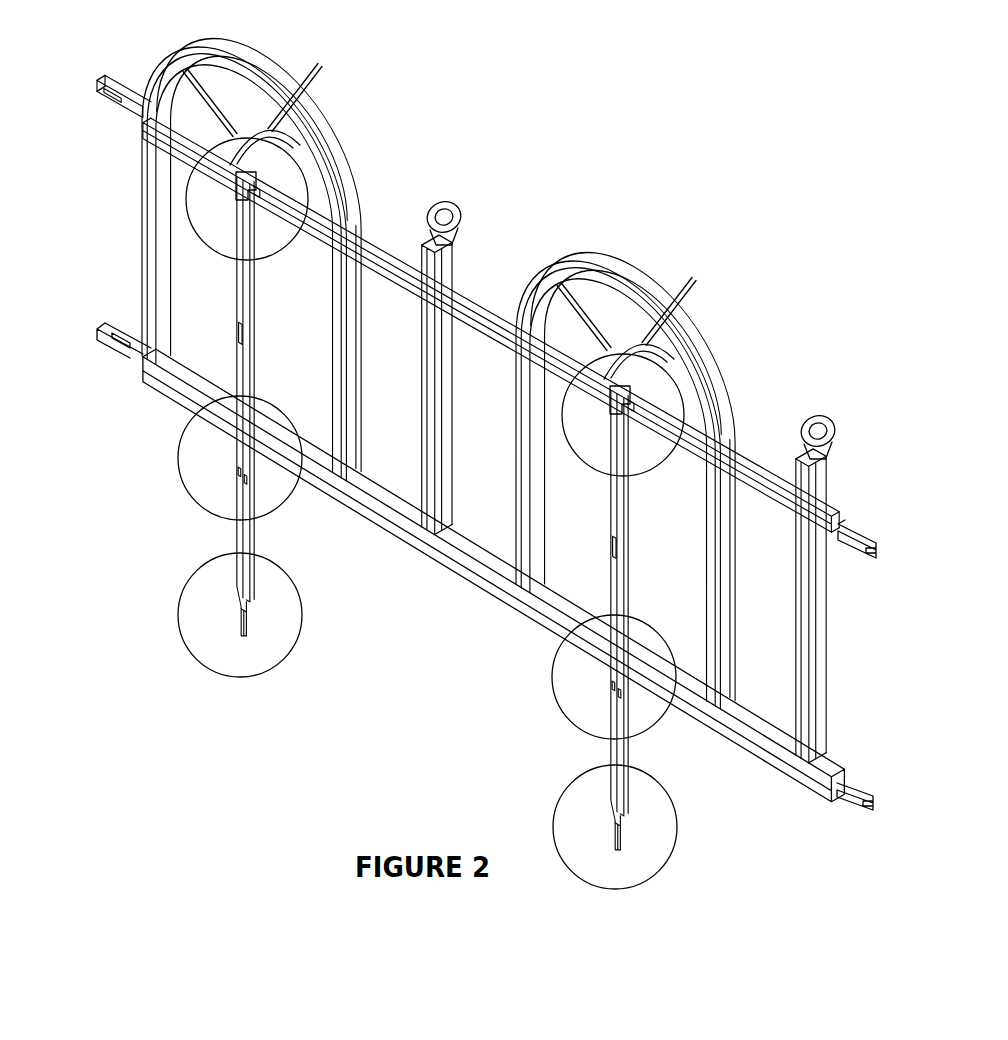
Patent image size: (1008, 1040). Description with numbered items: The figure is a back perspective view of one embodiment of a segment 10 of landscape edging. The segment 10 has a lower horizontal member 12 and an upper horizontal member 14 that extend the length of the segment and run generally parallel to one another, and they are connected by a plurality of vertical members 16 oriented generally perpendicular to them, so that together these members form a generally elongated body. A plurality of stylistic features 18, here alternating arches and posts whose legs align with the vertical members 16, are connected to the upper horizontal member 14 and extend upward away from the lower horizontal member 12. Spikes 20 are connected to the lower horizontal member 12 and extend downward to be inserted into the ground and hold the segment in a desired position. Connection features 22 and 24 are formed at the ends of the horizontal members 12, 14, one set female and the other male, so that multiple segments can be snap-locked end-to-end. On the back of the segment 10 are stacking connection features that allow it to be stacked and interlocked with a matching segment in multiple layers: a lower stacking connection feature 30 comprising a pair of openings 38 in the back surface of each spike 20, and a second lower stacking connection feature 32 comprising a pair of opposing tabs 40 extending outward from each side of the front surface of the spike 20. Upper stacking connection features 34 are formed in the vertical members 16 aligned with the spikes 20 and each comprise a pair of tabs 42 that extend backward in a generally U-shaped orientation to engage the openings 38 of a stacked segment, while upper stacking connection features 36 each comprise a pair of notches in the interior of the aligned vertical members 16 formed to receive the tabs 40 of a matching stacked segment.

The segment 10 is at (483, 444).
The lower horizontal member 12 is at (168, 405).
The upper horizontal member 14 is at (478, 293).
The vertical members 16 is at (150, 216).
The stylistic features 18 is at (288, 49).
The spikes 20 is at (232, 542).
The connection features 22 is at (102, 87).
The connection features 24 is at (872, 549).
The lower stacking connection feature 30 is at (270, 518).
The second lower stacking connection feature 32 is at (272, 673).
The upper stacking connection features 34 is at (285, 259).
The upper stacking connection features 36 is at (263, 343).
The openings 38 is at (220, 473).
The opposing tabs 40 is at (262, 618).
The tabs 42 is at (226, 213).